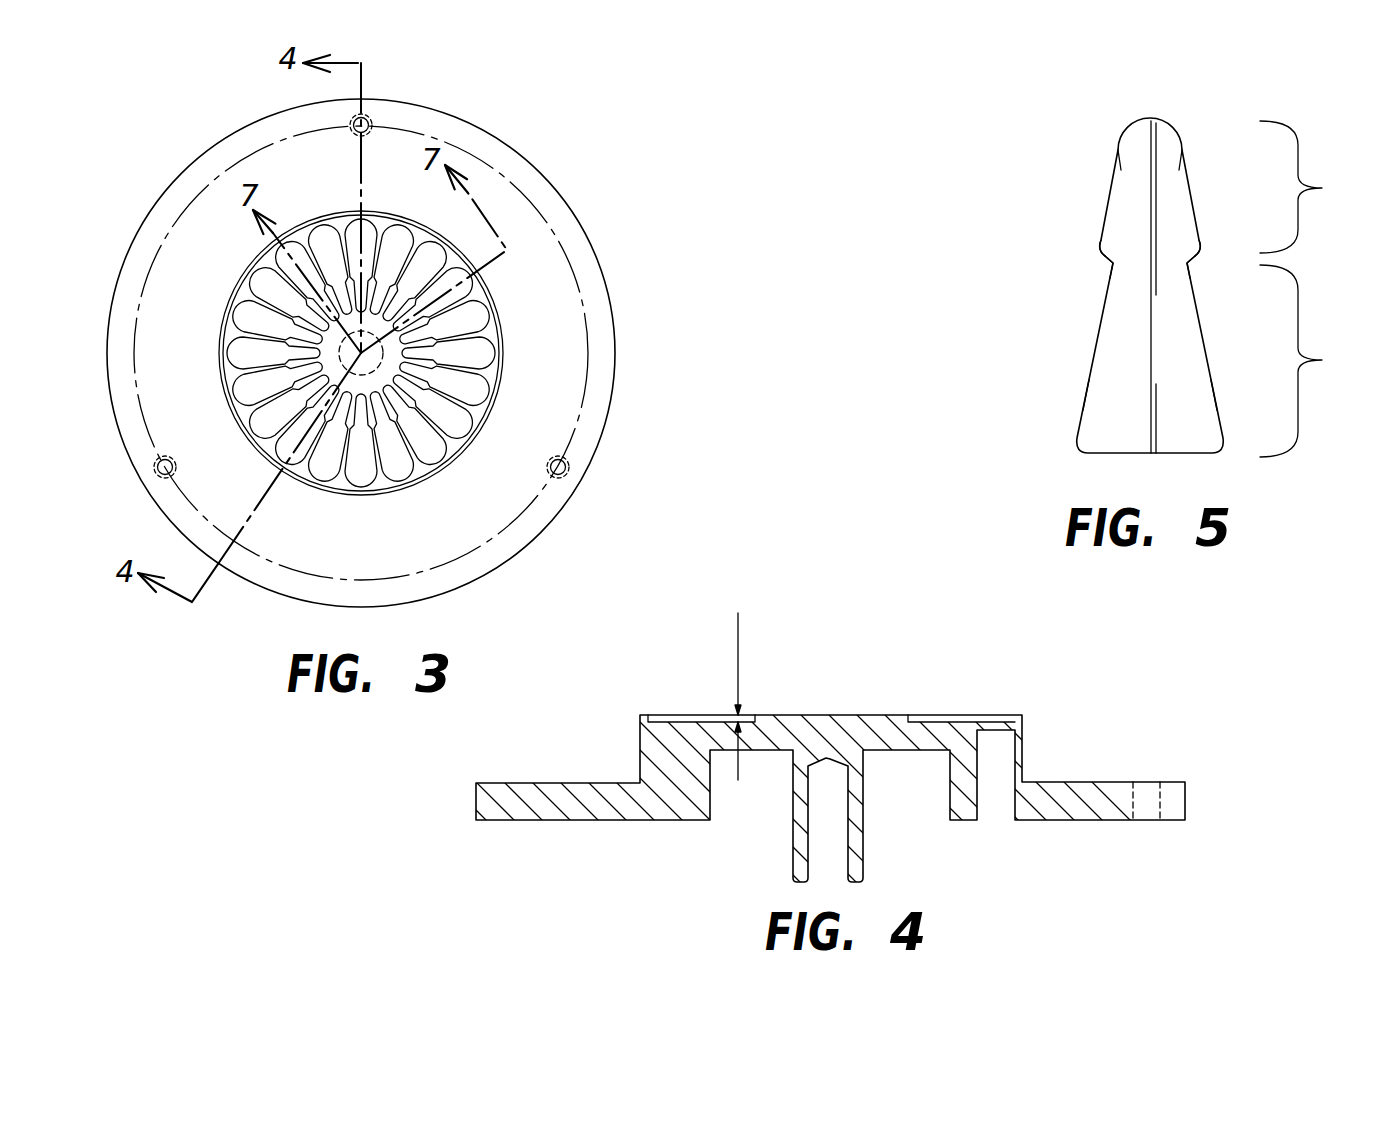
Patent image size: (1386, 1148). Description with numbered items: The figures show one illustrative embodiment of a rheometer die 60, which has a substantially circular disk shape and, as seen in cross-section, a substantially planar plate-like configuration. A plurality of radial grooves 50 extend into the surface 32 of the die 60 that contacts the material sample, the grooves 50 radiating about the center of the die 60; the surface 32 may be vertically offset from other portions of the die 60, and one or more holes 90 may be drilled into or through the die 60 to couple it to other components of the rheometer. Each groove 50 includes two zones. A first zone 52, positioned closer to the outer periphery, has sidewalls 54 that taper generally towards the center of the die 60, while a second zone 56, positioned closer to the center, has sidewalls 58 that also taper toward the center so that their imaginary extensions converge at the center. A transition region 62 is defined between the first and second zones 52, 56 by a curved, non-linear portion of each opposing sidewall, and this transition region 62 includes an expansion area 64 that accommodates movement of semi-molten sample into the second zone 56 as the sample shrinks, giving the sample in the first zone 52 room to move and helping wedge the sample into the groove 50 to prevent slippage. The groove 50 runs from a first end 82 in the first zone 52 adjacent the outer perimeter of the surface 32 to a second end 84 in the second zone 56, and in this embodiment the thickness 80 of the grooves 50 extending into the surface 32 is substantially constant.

In FIG. 3, the surface 32 is at (440, 314).
In FIG. 4, the surface 32 is at (830, 714).
In FIG. 3, the radial groove 50 is at (265, 279).
In FIG. 4, the radial groove 50 is at (690, 714).
In FIG. 5, the radial groove 50 is at (1123, 113).
In FIG. 5, the first zone 52 is at (1319, 361).
In FIG. 5, the sidewalls 54 is at (1096, 386).
In FIG. 5, the second zone 56 is at (1317, 187).
In FIG. 5, the sidewalls 58 is at (1124, 162).
In FIG. 3, the rheometer die 60 is at (143, 216).
In FIG. 4, the rheometer die 60 is at (1020, 690).
In FIG. 5, the transition region 62 is at (1112, 264).
In FIG. 5, the expansion area 64 is at (1100, 246).
In FIG. 4, the thickness 80 is at (738, 613).
In FIG. 5, the first end 82 is at (1150, 455).
In FIG. 5, the second end 84 is at (1150, 120).
In FIG. 3, the holes 90 is at (372, 122).
In FIG. 4, the holes 90 is at (1148, 782).